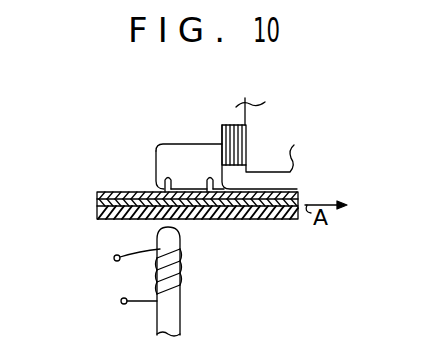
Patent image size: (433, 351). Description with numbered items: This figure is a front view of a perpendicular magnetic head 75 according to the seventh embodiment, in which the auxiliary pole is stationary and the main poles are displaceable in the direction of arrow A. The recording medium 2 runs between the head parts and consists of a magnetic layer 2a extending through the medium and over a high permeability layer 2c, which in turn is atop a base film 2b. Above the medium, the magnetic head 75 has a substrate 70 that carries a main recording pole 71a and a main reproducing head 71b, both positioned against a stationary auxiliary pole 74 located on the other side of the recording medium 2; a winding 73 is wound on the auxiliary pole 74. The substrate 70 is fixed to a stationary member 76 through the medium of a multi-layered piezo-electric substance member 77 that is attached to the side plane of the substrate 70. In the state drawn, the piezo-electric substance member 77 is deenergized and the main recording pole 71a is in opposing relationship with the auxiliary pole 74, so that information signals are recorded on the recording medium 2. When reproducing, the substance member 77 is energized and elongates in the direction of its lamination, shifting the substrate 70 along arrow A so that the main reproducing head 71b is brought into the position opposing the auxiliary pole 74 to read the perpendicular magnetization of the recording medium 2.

The perpendicular magnetic head 75 is at (96, 156).
The substrate 70 is at (168, 153).
The main recording pole 71a is at (159, 183).
The main reproducing head 71b is at (205, 181).
The stationary member 76 is at (236, 107).
The multi-layered piezo-electric substance member 77 is at (236, 148).
The recording medium 2 is at (296, 189).
The magnetic layer 2a is at (109, 191).
The base film 2b is at (108, 218).
The high permeability layer 2c is at (106, 203).
The winding 73 is at (132, 257).
The stationary auxiliary pole 74 is at (175, 311).